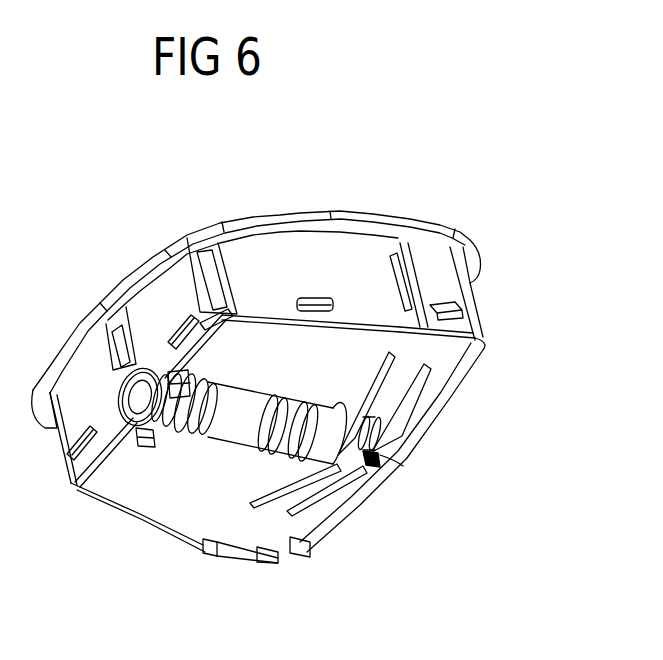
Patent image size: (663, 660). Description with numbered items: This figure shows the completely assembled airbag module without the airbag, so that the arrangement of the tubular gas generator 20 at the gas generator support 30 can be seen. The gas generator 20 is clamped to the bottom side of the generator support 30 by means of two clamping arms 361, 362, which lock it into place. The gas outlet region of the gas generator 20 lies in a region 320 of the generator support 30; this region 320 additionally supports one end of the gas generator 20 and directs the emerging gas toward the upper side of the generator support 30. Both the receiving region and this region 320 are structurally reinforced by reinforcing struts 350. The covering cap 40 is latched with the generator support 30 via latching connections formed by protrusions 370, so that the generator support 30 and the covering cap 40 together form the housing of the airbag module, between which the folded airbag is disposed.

The covering cap 40 is at (372, 232).
The protrusions 370 is at (317, 298).
The clamping arm 362 is at (178, 397).
The reinforcing struts 350 is at (395, 406).
The region 320 is at (380, 456).
The tubular gas generator 20 is at (225, 440).
The clamping arm 361 is at (140, 443).
The gas generator support 30 is at (165, 505).